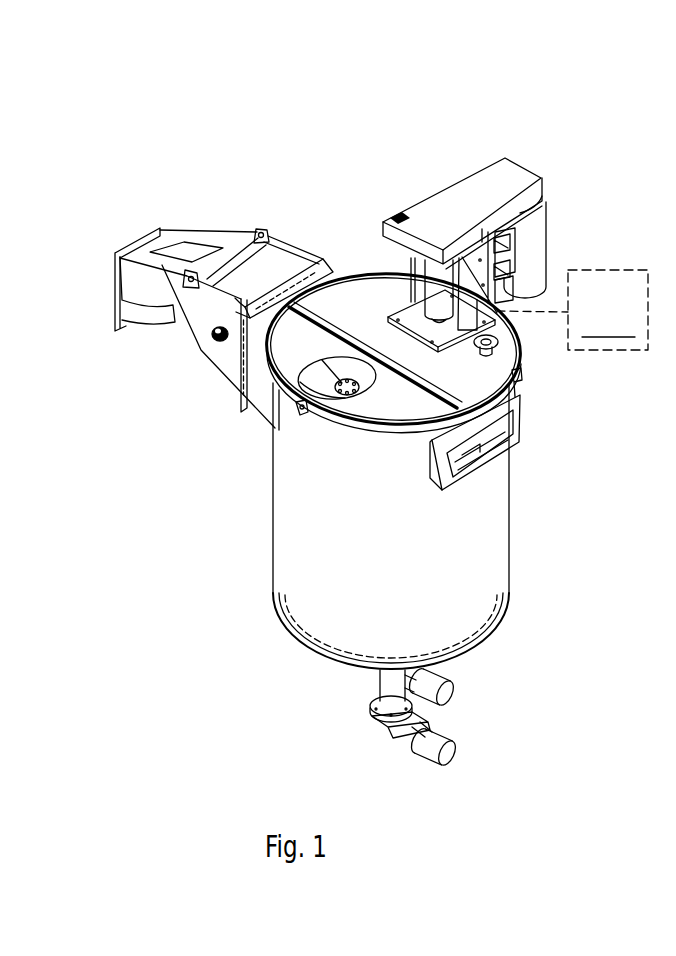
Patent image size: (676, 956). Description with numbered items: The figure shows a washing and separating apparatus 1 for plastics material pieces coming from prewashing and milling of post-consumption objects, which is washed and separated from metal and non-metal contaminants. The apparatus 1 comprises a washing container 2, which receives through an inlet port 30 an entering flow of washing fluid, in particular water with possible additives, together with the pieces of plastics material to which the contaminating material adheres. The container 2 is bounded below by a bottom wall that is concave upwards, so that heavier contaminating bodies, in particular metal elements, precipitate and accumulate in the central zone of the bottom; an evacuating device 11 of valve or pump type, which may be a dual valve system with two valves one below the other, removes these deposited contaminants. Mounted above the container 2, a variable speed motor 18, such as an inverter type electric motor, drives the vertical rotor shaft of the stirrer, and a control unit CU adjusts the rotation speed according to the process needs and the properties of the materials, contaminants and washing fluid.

The washing and separating apparatus 1 is at (343, 176).
The washing container 2 is at (497, 559).
The evacuating device 11 is at (357, 696).
The variable speed motor 18 is at (502, 257).
The inlet port 30 is at (539, 452).
The control unit CU is at (608, 310).